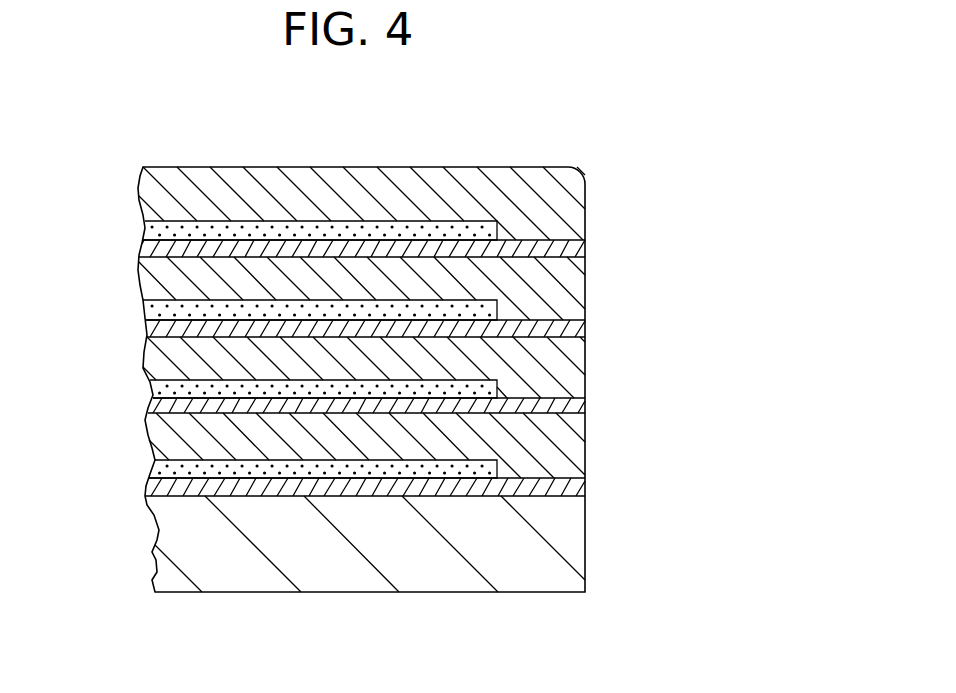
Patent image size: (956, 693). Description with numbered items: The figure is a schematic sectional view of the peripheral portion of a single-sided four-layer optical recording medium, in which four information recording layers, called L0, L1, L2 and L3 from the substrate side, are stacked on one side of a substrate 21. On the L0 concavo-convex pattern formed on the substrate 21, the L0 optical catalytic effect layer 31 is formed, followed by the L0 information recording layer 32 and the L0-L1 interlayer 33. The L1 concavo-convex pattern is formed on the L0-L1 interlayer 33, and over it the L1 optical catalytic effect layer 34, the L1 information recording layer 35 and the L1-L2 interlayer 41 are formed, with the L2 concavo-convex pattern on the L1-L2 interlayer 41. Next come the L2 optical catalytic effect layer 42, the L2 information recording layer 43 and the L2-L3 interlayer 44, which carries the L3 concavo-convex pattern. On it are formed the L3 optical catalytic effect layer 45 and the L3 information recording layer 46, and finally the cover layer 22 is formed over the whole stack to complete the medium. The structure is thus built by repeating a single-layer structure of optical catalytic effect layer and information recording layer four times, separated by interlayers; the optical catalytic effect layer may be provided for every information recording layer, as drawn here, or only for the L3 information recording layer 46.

The substrate 21 is at (158, 575).
The cover layer 22 is at (244, 178).
The L0 optical catalytic effect layer 31 is at (148, 487).
The L0 information recording layer 32 is at (163, 467).
The L0-L1 interlayer 33 is at (168, 438).
The L1 optical catalytic effect layer 34 is at (152, 410).
The L1 information recording layer 35 is at (153, 388).
The L1-L2 interlayer 41 is at (585, 362).
The L2 optical catalytic effect layer 42 is at (585, 328).
The L2 information recording layer 43 is at (495, 312).
The L2-L3 interlayer 44 is at (585, 272).
The L3 optical catalytic effect layer 45 is at (585, 246).
The L3 information recording layer 46 is at (495, 228).